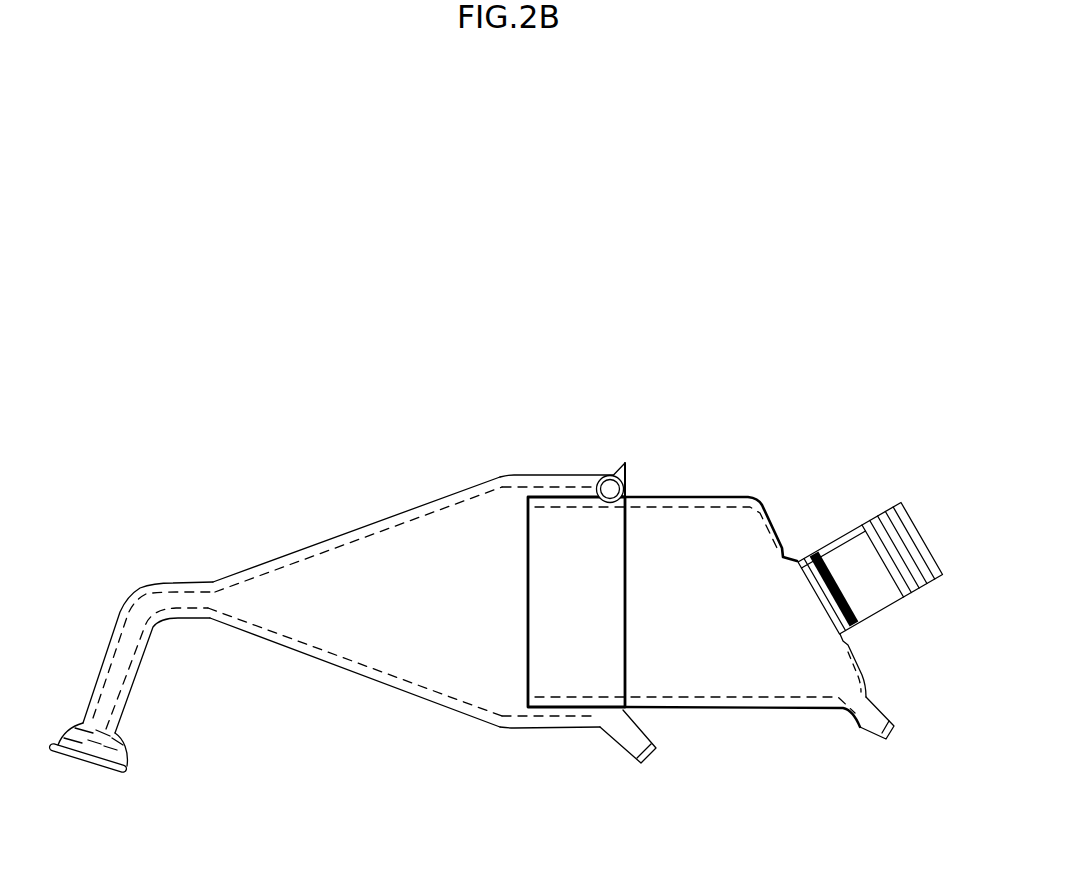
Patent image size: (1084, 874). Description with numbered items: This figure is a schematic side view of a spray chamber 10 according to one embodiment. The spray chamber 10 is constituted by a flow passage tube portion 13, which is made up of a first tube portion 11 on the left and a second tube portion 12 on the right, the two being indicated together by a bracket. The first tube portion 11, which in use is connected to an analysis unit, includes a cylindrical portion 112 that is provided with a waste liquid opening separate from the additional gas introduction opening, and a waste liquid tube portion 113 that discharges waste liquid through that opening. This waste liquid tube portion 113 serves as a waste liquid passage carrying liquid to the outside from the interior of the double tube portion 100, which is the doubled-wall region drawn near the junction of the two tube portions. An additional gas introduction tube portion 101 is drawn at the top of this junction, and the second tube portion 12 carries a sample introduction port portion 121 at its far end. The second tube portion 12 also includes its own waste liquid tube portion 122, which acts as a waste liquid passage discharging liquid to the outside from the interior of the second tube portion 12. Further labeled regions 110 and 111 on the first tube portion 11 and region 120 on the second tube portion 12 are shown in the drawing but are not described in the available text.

The spray chamber 10 is at (270, 868).
The first tube portion 11 is at (436, 327).
The second tube portion 12 is at (684, 343).
The flow passage tube portion 13 is at (768, 163).
The double tube portion 100 is at (612, 755).
The additional gas introduction tube portion 101 is at (620, 497).
The mouthpiece 110 is at (173, 573).
The tapered portion 111 is at (335, 530).
The cylindrical portion 112 is at (525, 470).
The waste liquid tube portion 113 is at (642, 762).
The body portion 120 is at (680, 494).
The sample introduction port portion 121 is at (842, 533).
The waste liquid tube portion 122 is at (862, 732).